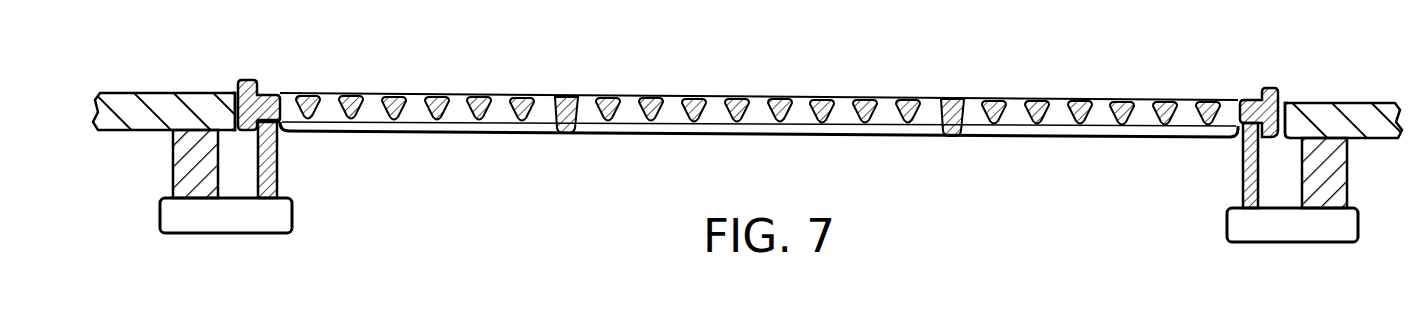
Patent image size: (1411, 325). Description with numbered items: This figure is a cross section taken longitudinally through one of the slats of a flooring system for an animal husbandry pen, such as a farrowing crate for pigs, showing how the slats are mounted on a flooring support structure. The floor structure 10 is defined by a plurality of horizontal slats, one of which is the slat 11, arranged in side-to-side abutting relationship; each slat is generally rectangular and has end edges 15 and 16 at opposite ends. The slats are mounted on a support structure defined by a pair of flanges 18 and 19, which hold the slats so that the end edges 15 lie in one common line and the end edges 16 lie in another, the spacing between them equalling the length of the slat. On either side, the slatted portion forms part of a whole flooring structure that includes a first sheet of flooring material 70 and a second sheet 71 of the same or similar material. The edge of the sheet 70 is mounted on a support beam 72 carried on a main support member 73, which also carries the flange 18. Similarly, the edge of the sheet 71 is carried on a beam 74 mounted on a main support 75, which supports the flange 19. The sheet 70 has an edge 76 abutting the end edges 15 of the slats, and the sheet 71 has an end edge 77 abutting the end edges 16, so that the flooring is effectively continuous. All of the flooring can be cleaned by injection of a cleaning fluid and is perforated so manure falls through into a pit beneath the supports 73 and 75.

The floor structure 10 is at (759, 79).
The slat 11 is at (710, 94).
The end edge 15 is at (238, 80).
The end edge 16 is at (1280, 90).
The flange 18 is at (281, 167).
The flange 19 is at (1241, 170).
The first sheet of flooring material 70 is at (145, 91).
The second sheet of flooring material 71 is at (1350, 101).
The support beam 72 is at (172, 157).
The main support member 73 is at (293, 215).
The beam 74 is at (1343, 172).
The main support 75 is at (1226, 222).
The edge 76 is at (234, 88).
The end edge 77 is at (1287, 99).